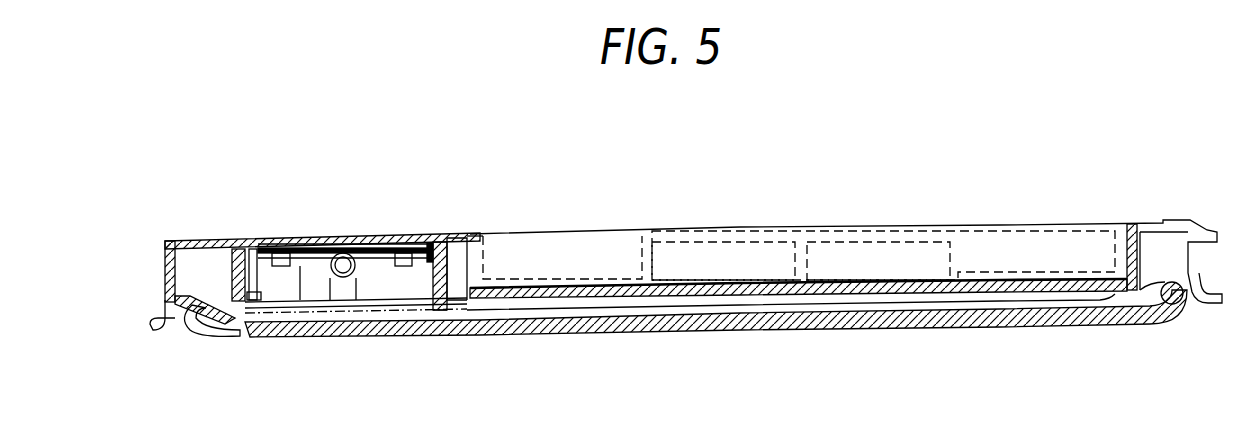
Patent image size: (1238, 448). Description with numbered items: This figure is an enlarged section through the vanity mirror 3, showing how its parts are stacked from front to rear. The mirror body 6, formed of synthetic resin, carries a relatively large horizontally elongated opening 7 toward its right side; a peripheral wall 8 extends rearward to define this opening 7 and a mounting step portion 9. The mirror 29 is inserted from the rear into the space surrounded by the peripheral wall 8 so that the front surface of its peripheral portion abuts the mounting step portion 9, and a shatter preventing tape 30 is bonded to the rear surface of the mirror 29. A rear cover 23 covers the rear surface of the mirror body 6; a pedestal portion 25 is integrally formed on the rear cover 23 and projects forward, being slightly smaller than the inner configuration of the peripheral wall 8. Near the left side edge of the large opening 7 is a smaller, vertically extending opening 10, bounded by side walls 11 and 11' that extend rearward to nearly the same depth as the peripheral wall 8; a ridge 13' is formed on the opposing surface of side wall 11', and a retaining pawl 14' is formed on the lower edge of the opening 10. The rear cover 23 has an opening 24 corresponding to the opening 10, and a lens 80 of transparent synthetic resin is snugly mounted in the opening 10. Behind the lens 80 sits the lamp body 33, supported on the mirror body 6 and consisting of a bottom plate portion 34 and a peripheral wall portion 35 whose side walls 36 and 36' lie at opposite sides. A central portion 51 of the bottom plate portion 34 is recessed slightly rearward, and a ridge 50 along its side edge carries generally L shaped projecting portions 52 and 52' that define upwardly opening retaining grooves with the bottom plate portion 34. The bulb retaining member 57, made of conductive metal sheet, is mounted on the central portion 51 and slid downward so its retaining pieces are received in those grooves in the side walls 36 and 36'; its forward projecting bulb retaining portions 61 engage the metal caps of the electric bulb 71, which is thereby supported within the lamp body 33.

The vanity mirror 3 is at (1008, 186).
The mirror body 6 is at (1213, 307).
The opening 7 is at (1120, 318).
The peripheral wall 8 is at (1128, 240).
The mounting step portion 9 is at (488, 311).
The opening 10 is at (447, 302).
The side wall 11 is at (459, 243).
The side wall 11' is at (173, 275).
The ridge 13' is at (315, 251).
The retaining pawl 14' is at (232, 373).
The rear cover 23 is at (705, 232).
The opening 24 is at (453, 238).
The pedestal portion 25 is at (483, 262).
The mirror 29 is at (733, 318).
The shatter preventing tape 30 is at (850, 280).
The lamp body 33 is at (315, 250).
The bottom plate portion 34 is at (368, 246).
The peripheral wall portion 35 is at (418, 306).
The side wall 36 is at (436, 347).
The side wall 36' is at (342, 357).
The ridge 50 is at (395, 300).
The central portion 51 is at (375, 248).
The L shaped projecting portion 52 is at (417, 218).
The L shaped projecting portion 52' is at (249, 234).
The bulb retaining member 57 is at (302, 270).
The bulb retaining portion 61 is at (328, 300).
The electric bulb 71 is at (343, 277).
The lens 80 is at (250, 300).